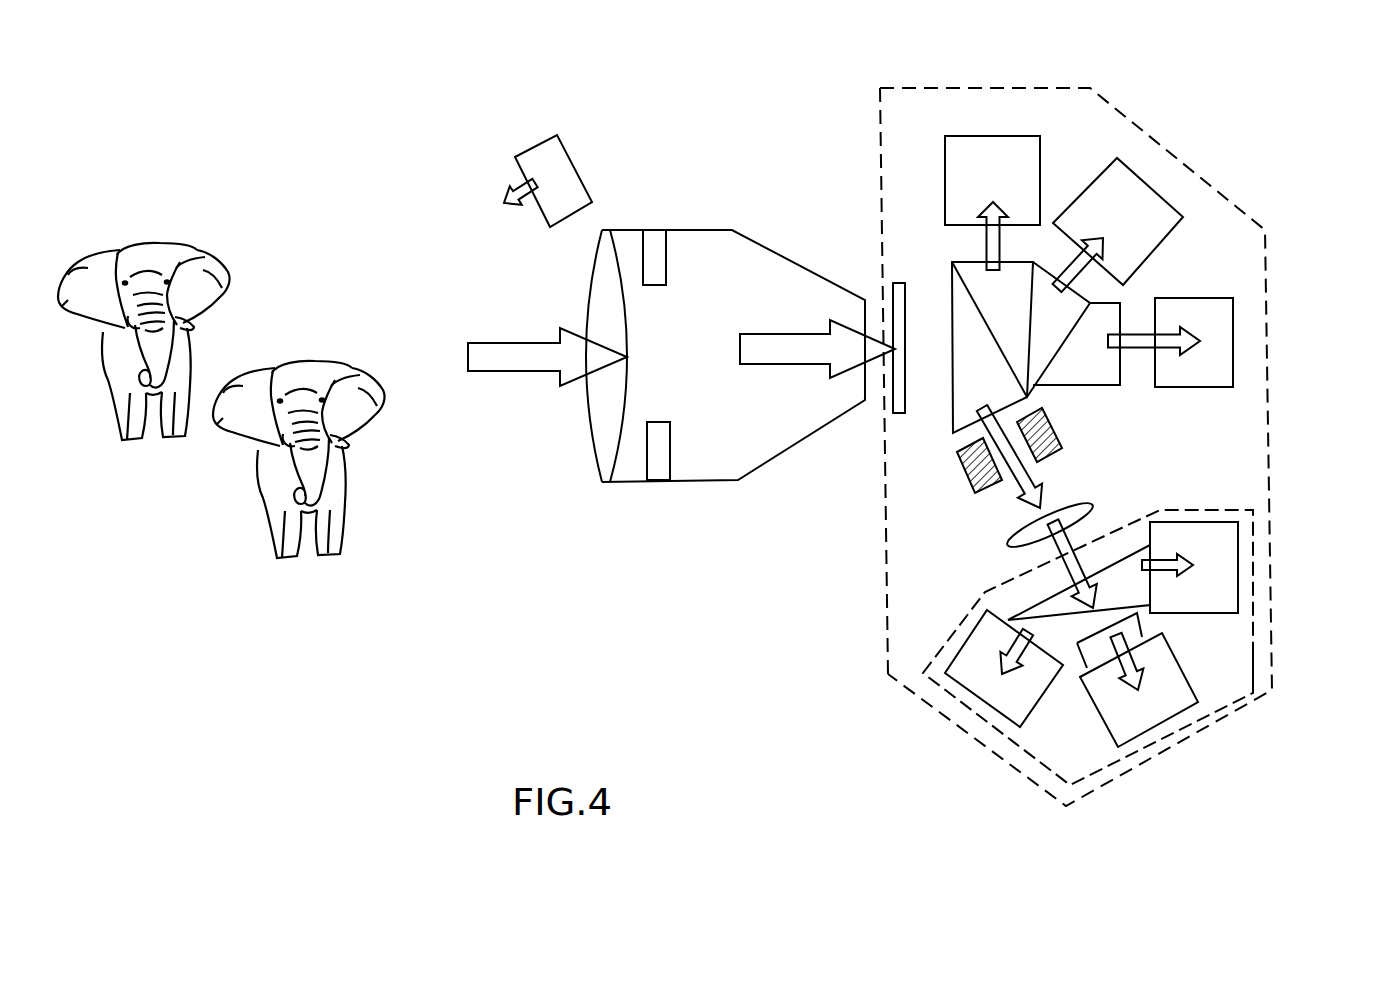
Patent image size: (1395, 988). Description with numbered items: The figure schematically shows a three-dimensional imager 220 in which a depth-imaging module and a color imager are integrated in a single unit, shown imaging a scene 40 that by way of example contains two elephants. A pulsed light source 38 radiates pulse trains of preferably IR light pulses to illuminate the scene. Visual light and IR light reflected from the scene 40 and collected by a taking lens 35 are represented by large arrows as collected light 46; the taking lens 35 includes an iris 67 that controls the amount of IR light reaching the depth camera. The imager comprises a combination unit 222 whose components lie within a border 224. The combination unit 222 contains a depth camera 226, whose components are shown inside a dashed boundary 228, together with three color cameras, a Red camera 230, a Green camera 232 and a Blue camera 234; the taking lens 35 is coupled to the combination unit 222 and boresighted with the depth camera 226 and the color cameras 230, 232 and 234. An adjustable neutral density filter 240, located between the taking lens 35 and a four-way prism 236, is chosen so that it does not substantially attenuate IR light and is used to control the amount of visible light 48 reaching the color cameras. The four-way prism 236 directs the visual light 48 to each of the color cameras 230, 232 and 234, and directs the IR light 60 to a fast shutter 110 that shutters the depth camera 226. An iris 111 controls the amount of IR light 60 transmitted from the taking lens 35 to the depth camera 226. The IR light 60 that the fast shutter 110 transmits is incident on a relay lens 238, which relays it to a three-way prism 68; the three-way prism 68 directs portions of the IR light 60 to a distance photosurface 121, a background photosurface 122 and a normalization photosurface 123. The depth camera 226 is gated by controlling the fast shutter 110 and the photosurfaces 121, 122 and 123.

The scene 40 is at (182, 547).
The 3D imager 220 is at (327, 170).
The pulsed light source 38 is at (568, 195).
The taking lens 35 is at (762, 413).
The iris 67 is at (655, 432).
The collected light 46 is at (508, 355).
The border 224 is at (880, 160).
The combination unit 222 is at (857, 98).
The 3D camera 226 is at (1257, 625).
The dashed boundary 228 is at (1258, 667).
The adjustable neutral density filter 240 is at (893, 405).
The four-way prism 236 is at (960, 410).
The visual light 48 is at (987, 242).
The Red (R) camera 230 is at (1018, 143).
The Green (G) camera 232 is at (1115, 167).
The Blue (B) camera 234 is at (1227, 310).
The iris 111 is at (960, 453).
The fast shutter 110 is at (1023, 472).
The IR light 60 is at (1035, 477).
The relay lens 238 is at (1007, 538).
The three-way prism 68 is at (1133, 556).
The normalization photosurface 123 is at (1228, 545).
The distance photosurface 121 is at (1010, 704).
The background photosurface 122 is at (1128, 727).